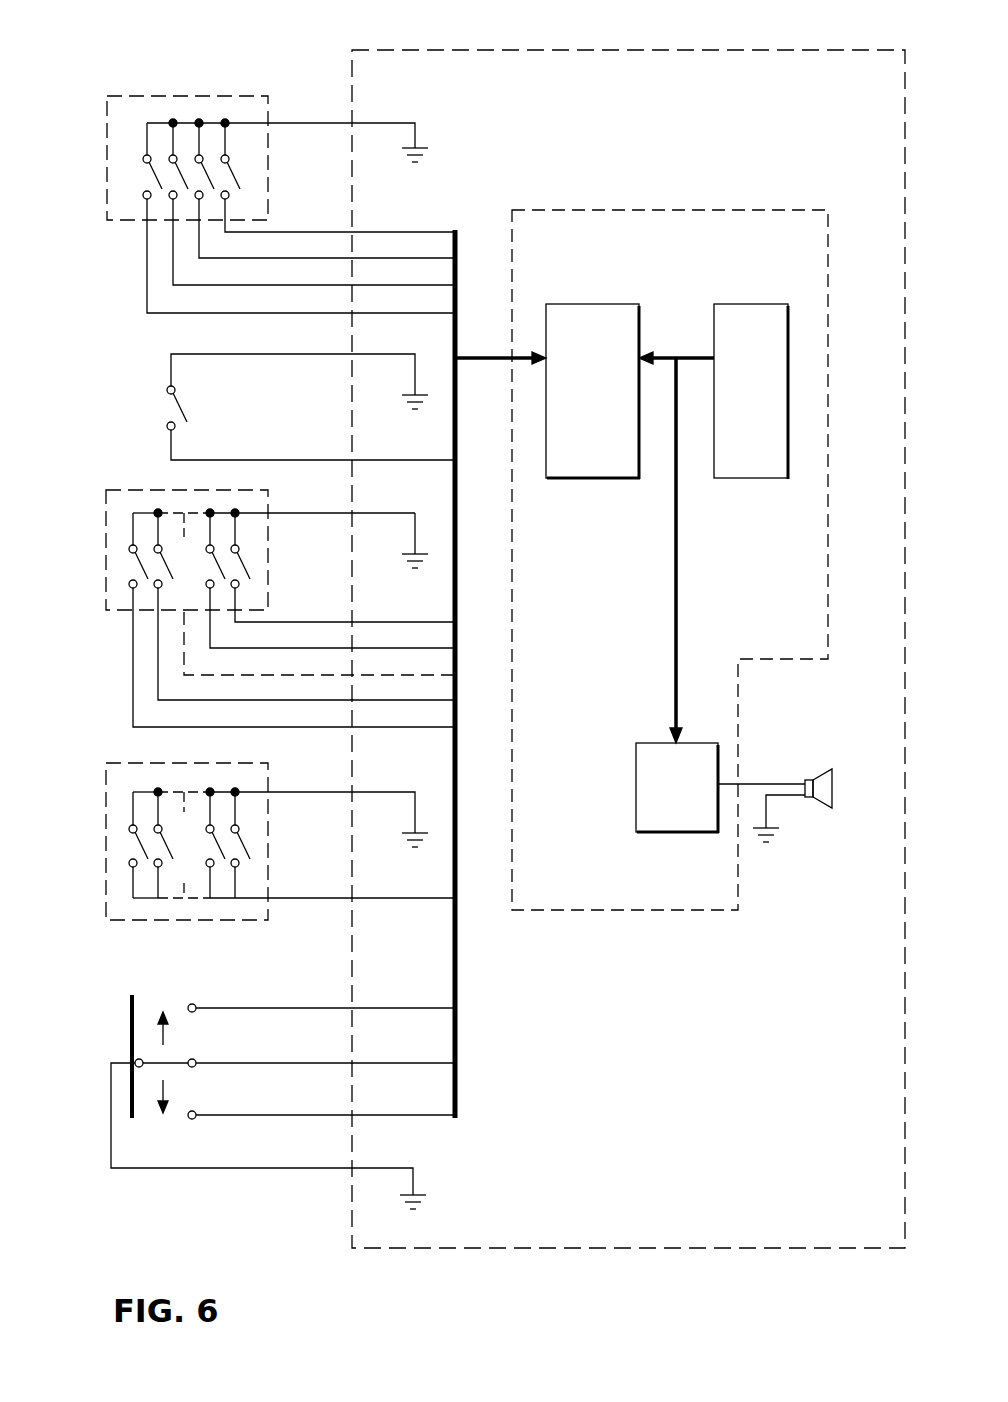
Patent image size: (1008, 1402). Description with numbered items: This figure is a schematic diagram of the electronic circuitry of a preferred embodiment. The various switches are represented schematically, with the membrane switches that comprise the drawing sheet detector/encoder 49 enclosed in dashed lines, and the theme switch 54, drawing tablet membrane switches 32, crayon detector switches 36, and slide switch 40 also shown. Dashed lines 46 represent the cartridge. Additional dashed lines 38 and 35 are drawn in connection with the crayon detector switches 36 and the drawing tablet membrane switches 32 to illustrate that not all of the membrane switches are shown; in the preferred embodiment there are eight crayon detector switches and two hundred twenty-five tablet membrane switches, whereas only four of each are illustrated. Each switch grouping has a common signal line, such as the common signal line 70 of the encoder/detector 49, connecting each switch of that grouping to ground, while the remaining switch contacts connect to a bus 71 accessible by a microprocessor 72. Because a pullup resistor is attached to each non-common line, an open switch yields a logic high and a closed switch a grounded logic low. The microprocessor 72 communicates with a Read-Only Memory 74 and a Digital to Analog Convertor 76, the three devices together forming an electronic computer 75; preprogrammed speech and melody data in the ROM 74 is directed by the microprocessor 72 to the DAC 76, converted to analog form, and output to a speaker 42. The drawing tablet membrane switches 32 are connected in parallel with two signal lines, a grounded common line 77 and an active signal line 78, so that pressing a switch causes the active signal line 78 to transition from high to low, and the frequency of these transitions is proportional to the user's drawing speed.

The cartridge 46 is at (627, 50).
The electronic computer 75 is at (625, 910).
The microprocessor 72 is at (568, 304).
The Read-Only Memory (ROM) 74 is at (728, 304).
The Digital to Analog Convertor (DAC) 76 is at (636, 810).
The speaker 42 is at (833, 786).
The bus 71 is at (458, 976).
The drawing sheet detector/encoder 49 is at (192, 96).
The common signal line 70 is at (377, 123).
The theme switch 54 is at (168, 386).
The crayon detector switches 36 is at (106, 542).
The dashed lines 38 is at (184, 652).
The drawing tablet membrane switches 32 is at (137, 763).
The dashed lines 35 is at (190, 792).
The common line 77 is at (372, 792).
The active signal line 78 is at (362, 900).
The slide switch 40 is at (112, 1008).